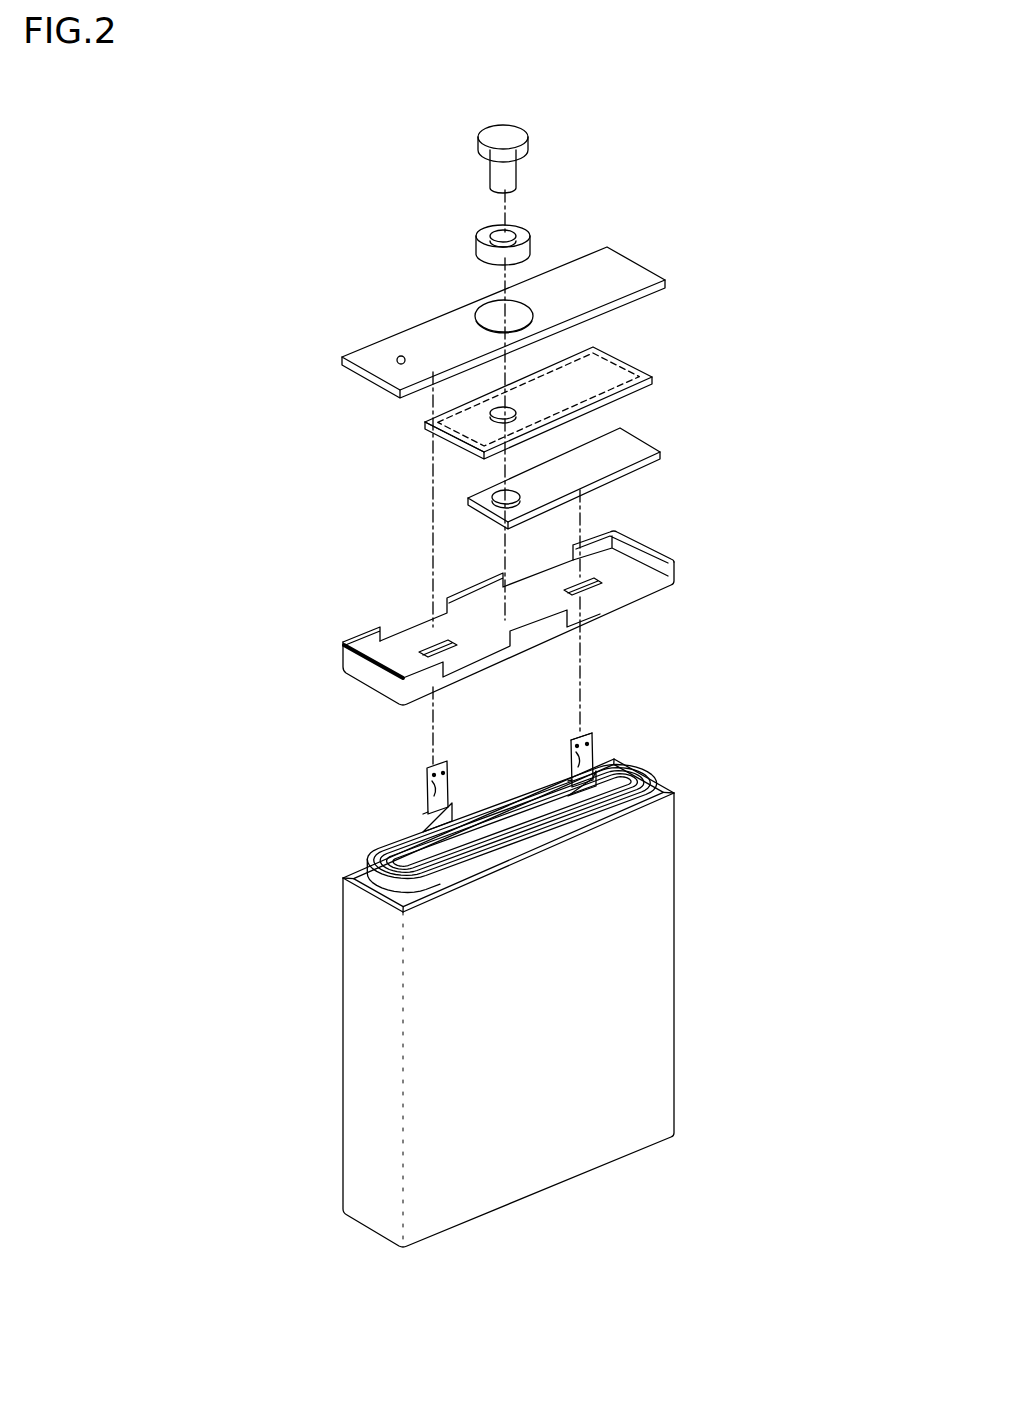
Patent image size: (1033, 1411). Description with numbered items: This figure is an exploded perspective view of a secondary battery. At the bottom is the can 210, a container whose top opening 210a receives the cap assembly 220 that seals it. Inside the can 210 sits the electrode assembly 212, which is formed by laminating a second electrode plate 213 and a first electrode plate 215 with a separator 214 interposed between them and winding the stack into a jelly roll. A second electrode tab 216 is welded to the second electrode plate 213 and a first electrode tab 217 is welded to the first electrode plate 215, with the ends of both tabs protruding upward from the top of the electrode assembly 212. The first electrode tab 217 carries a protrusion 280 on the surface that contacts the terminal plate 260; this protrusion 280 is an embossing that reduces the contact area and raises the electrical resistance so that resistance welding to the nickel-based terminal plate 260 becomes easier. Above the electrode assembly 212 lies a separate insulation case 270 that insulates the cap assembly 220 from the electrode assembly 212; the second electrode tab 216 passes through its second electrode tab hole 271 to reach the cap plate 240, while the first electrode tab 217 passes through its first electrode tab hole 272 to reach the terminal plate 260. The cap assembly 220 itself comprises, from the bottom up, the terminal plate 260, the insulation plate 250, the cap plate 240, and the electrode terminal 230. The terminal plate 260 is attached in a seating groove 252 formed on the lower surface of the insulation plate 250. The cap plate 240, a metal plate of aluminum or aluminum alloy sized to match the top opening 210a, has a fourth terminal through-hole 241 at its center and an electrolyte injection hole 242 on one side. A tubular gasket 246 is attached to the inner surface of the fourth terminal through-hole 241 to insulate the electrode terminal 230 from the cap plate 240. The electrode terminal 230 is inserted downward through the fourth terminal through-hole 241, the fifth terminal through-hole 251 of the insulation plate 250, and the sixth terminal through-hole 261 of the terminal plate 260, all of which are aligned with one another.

The can 210 is at (565, 1003).
The top opening 210a is at (660, 787).
The electrode assembly 212 is at (520, 789).
The second electrode plate 213 is at (637, 775).
The separator 214 is at (627, 767).
The first electrode plate 215 is at (615, 758).
The second electrode tab 216 is at (427, 795).
The first electrode tab 217 is at (568, 767).
The cap assembly 220 is at (768, 115).
The electrode terminal 230 is at (514, 134).
The cap plate 240 is at (542, 313).
The fourth terminal through-hole 241 is at (493, 311).
The electrolyte injection hole 242 is at (398, 357).
The tubular gasket 246 is at (482, 237).
The insulation plate 250 is at (550, 399).
The fifth terminal through-hole 251 is at (482, 427).
The seating groove 252 is at (432, 410).
The terminal plate 260 is at (577, 478).
The sixth terminal through-hole 261 is at (477, 507).
The insulation case 270 is at (506, 618).
The second electrode tab hole 271 is at (430, 648).
The first electrode tab hole 272 is at (638, 580).
The protrusion 280 is at (572, 745).